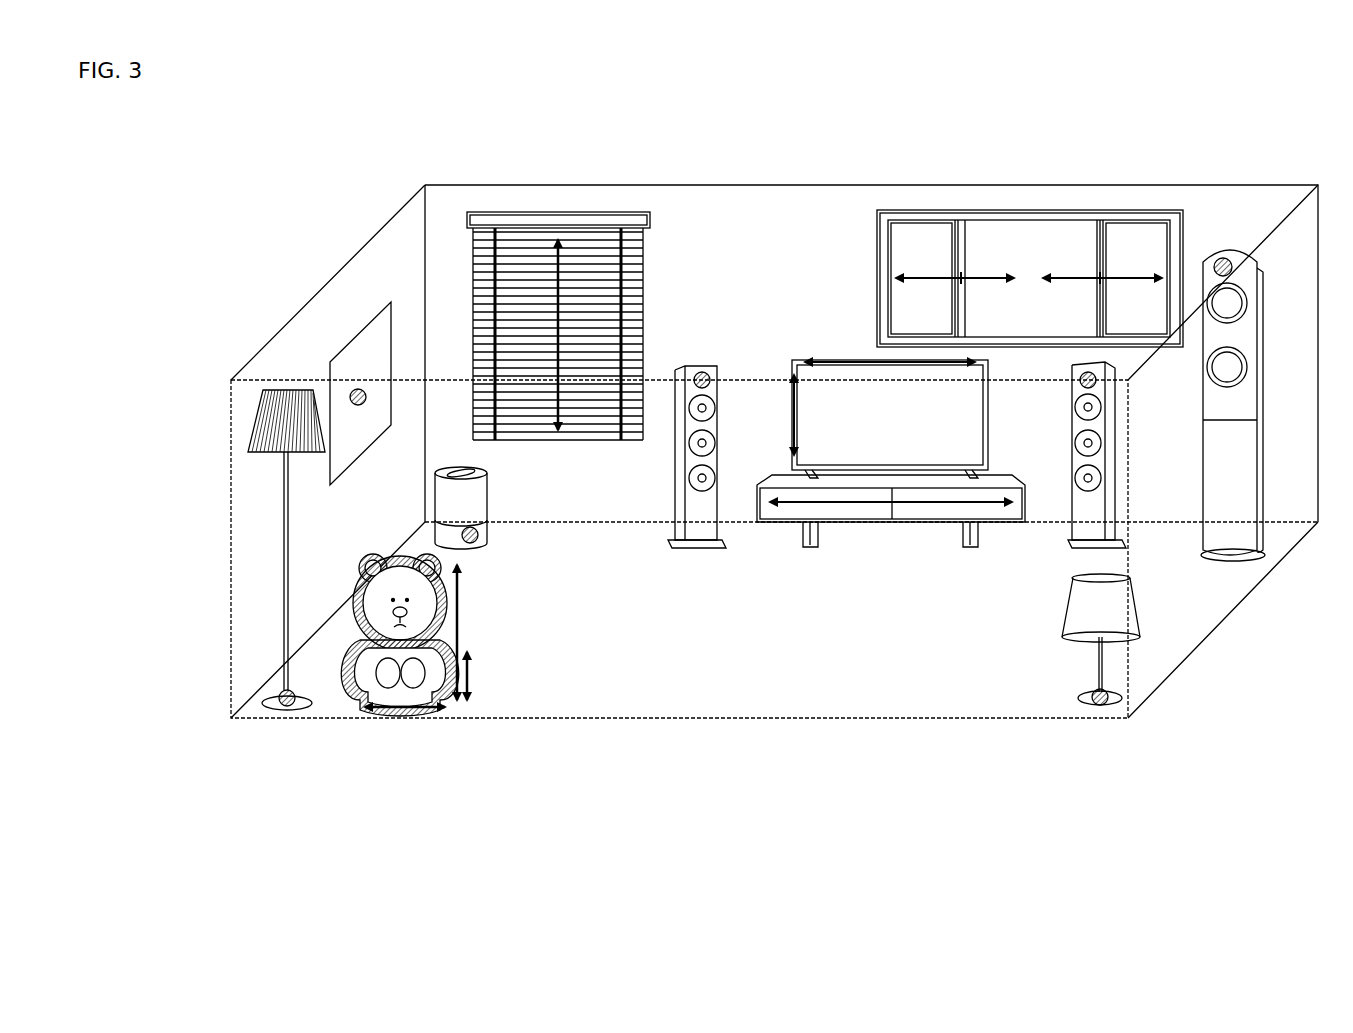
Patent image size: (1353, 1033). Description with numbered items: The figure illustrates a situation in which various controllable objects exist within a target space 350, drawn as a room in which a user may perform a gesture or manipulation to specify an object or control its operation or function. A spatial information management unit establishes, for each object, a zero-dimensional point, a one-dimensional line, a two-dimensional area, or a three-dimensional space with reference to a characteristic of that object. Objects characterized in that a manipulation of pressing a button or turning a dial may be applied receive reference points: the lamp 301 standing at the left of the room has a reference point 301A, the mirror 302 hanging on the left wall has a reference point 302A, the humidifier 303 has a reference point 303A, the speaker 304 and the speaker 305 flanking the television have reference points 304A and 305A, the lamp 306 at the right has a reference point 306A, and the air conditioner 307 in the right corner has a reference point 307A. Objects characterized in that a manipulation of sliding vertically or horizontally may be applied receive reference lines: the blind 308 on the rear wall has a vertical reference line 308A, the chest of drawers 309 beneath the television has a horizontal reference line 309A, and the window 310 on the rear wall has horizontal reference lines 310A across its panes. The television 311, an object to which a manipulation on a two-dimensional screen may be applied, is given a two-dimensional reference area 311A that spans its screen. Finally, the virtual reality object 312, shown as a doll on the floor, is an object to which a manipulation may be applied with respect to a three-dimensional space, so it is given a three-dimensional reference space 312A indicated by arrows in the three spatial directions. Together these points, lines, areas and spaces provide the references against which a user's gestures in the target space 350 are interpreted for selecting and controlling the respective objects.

The lamp 301 is at (285, 395).
The reference point 301A is at (275, 708).
The mirror 302 is at (372, 320).
The reference point 302A is at (352, 390).
The humidifier 303 is at (436, 478).
The reference point 303A is at (462, 535).
The speaker 304 is at (683, 368).
The reference point 304A is at (706, 374).
The speaker 305 is at (1098, 515).
The reference point 305A is at (1084, 374).
The lamp 306 is at (1137, 630).
The reference point 306A is at (1094, 706).
The air conditioner 307 is at (1245, 258).
The reference point 307A is at (1215, 260).
The blind 308 is at (507, 218).
The reference line 308A is at (562, 245).
The chest of drawers 309 is at (755, 525).
The reference line 309A is at (852, 522).
The window 310 is at (1013, 215).
The reference line 310A is at (1120, 275).
The television 311 is at (840, 395).
The reference area 311A is at (914, 360).
The virtual reality object 312 is at (338, 690).
The reference space 312A is at (477, 690).
The target space 350 is at (698, 720).